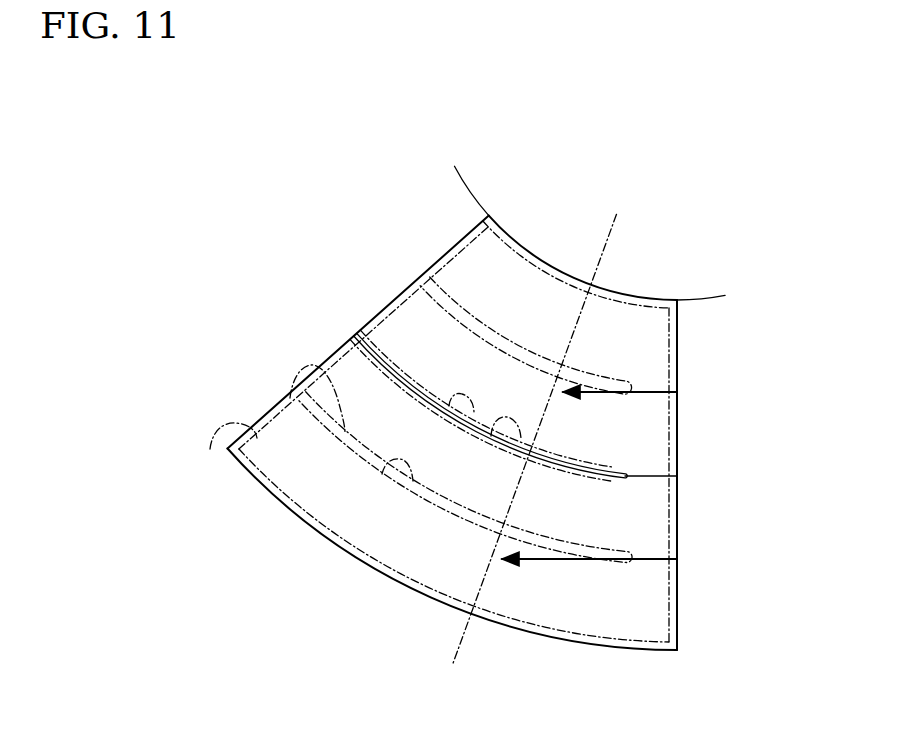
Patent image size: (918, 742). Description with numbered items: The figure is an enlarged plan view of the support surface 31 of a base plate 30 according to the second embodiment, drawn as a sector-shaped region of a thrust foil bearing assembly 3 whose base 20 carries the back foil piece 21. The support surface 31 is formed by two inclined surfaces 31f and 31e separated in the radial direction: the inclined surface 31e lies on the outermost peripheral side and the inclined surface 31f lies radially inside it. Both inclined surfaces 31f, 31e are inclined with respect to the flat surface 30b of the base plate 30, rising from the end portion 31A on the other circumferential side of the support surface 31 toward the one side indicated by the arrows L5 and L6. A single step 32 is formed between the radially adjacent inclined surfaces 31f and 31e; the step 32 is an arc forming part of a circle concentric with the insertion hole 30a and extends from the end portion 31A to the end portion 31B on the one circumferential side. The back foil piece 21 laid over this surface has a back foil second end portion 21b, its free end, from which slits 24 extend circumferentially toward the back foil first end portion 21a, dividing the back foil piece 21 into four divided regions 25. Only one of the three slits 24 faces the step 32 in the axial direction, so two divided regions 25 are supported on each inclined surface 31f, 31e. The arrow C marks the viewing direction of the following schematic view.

The stator core segment 3 is at (310, 130).
The base plate 20 is at (525, 624).
The back foil piece 21 is at (453, 469).
The back foil first end portion 21a is at (677, 485).
The back foil second end portion 21b is at (278, 416).
The slit 24 is at (465, 422).
The divided region 25 is at (211, 446).
The base plate 30 is at (467, 180).
The insertion hole 30a is at (683, 298).
The flat surface 30b is at (706, 347).
The support surface 31 is at (373, 182).
The end portion 31A is at (677, 470).
The end portion 31B is at (377, 312).
The inclined surface 31e is at (345, 433).
The inclined surface 31f is at (447, 300).
The step 32 is at (517, 430).
The arrow C is at (677, 288).
The arrow L5 is at (627, 392).
The arrow L6 is at (627, 558).